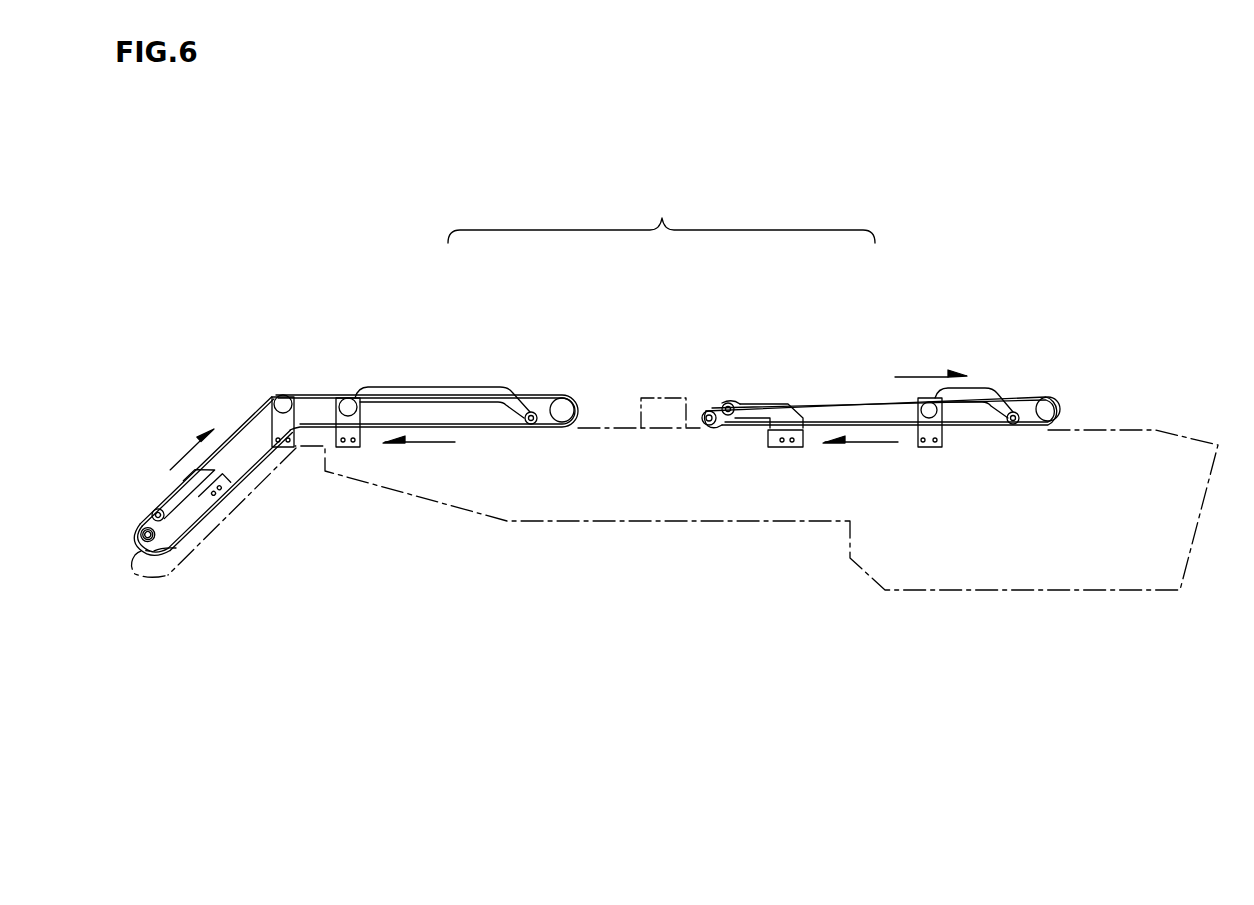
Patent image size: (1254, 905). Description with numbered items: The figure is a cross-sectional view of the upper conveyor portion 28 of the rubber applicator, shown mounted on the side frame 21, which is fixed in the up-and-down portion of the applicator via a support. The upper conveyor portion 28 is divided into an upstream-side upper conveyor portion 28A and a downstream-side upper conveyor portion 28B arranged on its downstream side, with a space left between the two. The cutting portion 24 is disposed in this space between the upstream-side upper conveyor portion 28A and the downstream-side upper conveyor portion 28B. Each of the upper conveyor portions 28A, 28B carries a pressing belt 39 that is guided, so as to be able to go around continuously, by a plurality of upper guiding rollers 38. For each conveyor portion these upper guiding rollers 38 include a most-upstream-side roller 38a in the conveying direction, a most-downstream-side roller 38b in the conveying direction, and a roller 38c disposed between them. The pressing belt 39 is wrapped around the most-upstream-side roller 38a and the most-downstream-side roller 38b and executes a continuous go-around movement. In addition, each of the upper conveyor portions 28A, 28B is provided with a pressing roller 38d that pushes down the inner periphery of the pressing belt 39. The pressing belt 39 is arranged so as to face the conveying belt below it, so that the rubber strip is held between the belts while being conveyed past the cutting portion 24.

The side frame 21 is at (1175, 525).
The cutting portion 24 is at (666, 388).
The upper conveyor portion 28 is at (661, 216).
The upstream-side upper conveyor portion 28A is at (933, 343).
The downstream-side upper conveyor portion 28B is at (372, 402).
The upper guiding roller 38 is at (571, 400).
The most-upstream-side roller 38a is at (427, 412).
The most-downstream-side roller 38b is at (148, 525).
The roller 38c is at (277, 395).
The pressing roller 38d is at (531, 410).
The pressing belt 39 is at (314, 395).